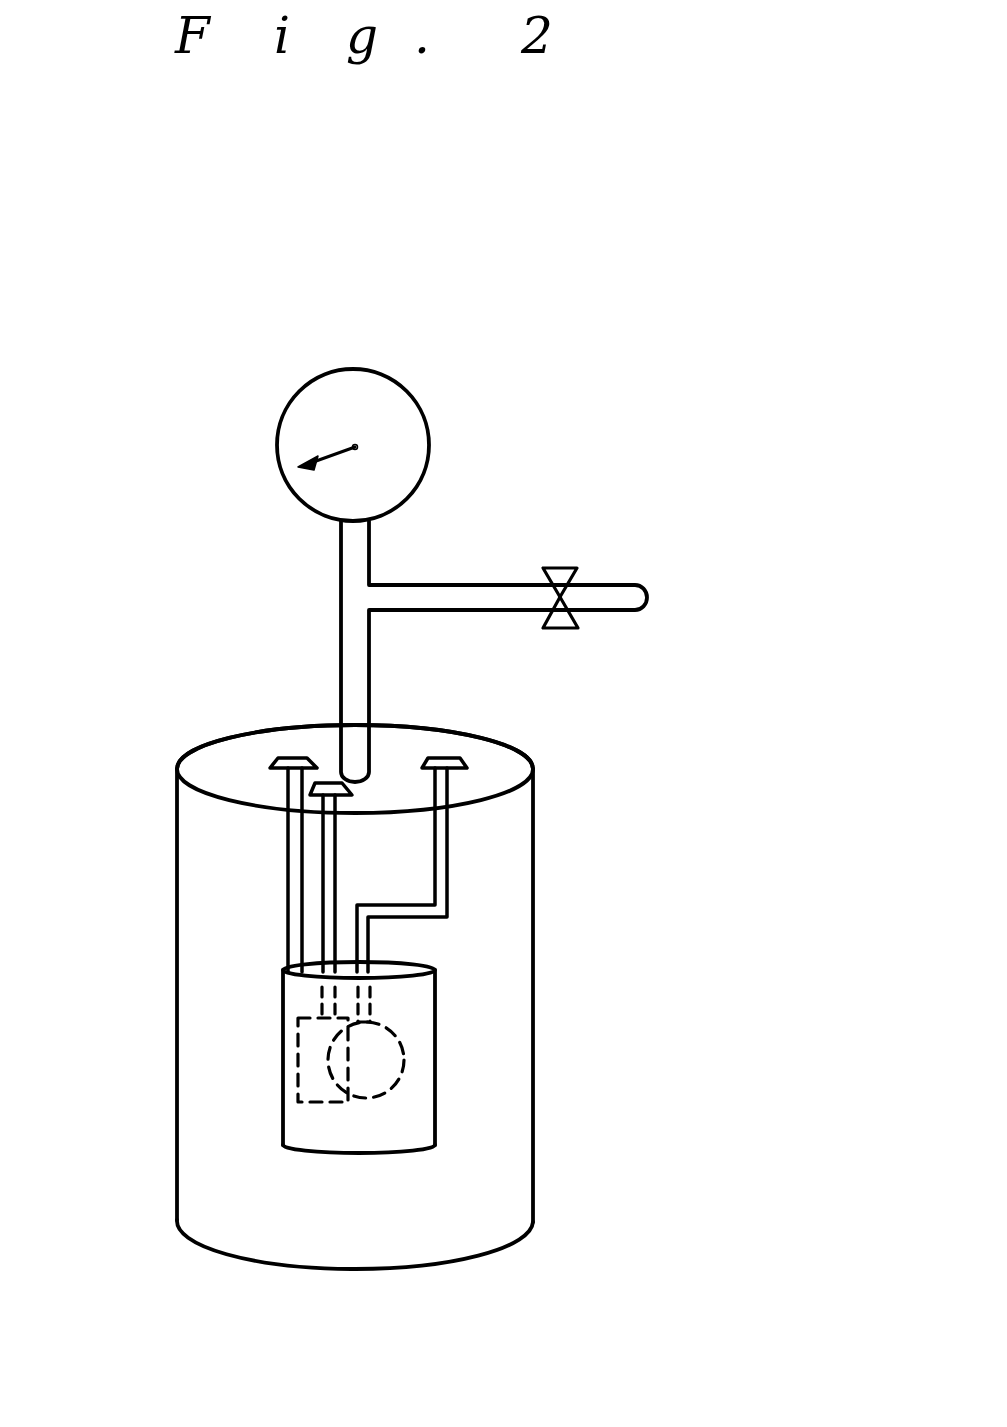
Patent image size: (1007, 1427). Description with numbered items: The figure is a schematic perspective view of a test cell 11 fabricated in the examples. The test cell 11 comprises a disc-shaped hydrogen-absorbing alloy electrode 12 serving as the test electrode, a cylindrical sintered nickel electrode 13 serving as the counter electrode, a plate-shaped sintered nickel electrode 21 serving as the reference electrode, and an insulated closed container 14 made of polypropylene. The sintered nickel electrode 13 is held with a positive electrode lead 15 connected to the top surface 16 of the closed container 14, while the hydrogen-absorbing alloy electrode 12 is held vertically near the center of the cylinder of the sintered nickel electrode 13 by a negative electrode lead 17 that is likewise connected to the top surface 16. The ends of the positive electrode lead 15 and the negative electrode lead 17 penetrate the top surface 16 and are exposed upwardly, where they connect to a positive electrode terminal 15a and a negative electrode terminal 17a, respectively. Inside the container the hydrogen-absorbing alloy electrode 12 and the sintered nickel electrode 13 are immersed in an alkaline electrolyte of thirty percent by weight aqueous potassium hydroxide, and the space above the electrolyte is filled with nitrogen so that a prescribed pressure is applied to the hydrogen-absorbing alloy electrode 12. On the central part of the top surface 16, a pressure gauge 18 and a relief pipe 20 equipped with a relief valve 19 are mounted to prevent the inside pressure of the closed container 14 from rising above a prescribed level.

The test cell 11 is at (405, 335).
The hydrogen-absorbing alloy electrode 12 is at (403, 1048).
The sintered nickel electrode 13 is at (283, 1072).
The closed container 14 is at (533, 947).
The positive electrode lead 15 is at (285, 878).
The positive electrode terminal 15a is at (280, 760).
The top surface 16 is at (497, 767).
The negative electrode lead 17 is at (450, 863).
The negative electrode terminal 17a is at (450, 760).
The pressure gauge 18 is at (405, 393).
The relief valve 19 is at (563, 570).
The relief pipe 20 is at (453, 585).
The sintered nickel electrode 21 is at (330, 1102).